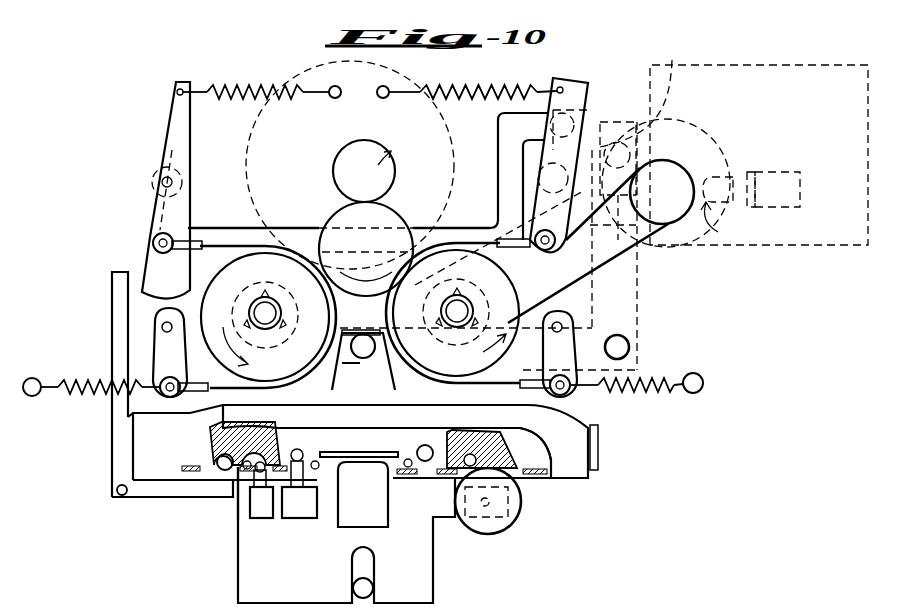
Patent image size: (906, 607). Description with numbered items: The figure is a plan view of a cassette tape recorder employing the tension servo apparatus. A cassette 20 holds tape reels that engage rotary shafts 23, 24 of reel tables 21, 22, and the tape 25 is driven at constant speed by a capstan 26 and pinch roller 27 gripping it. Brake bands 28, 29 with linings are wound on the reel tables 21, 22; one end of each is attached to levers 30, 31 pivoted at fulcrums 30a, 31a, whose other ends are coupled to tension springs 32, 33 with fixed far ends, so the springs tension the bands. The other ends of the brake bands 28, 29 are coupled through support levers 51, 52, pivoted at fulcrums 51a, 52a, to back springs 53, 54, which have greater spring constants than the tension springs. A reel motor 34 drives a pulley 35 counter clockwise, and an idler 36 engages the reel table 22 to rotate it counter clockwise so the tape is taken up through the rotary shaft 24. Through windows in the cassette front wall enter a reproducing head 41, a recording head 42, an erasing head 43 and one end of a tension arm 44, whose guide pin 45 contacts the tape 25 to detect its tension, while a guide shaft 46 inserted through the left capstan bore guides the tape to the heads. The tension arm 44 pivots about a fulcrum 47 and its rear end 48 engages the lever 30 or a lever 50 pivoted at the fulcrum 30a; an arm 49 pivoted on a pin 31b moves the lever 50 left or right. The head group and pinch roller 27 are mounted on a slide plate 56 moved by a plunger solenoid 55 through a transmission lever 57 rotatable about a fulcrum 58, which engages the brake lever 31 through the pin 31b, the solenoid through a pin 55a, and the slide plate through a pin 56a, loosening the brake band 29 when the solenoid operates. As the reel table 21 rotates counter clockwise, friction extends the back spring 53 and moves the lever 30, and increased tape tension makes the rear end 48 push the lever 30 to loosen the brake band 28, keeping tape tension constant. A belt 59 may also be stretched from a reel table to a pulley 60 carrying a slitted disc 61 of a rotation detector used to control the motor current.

The cassette 20 is at (580, 472).
The reel table 21 is at (193, 413).
The reel table 22 is at (530, 404).
The rotary shaft 23 is at (285, 318).
The rotary shaft 24 is at (510, 278).
The tape 25 is at (420, 481).
The capstan 26 is at (519, 501).
The pinch roller 27 is at (497, 528).
The brake band 28 is at (332, 377).
The brake band 29 is at (473, 220).
The lever 30 is at (150, 246).
The fulcrum 30a is at (160, 166).
The lever 31 is at (588, 92).
The fulcrum 31a is at (537, 167).
The pin 31b is at (597, 111).
The tension spring 32 is at (270, 85).
The tension spring 33 is at (490, 80).
The reel motor 34 is at (262, 142).
The pulley 35 is at (394, 150).
The idler 36 is at (396, 200).
The reproducing head 41 is at (380, 514).
The recording head 42 is at (300, 520).
The erasing head 43 is at (267, 520).
The tension arm 44 is at (157, 488).
The guide pin 45 is at (227, 478).
The guide shaft 46 is at (238, 505).
The fulcrum 47 is at (120, 496).
The rear end 48 is at (106, 294).
The arm 49 is at (237, 226).
The lever 50 is at (162, 327).
The support lever 51 is at (160, 366).
The fulcrum 51a is at (156, 333).
The support lever 52 is at (578, 340).
The fulcrum 52a is at (580, 306).
The back spring 53 is at (95, 396).
The back spring 54 is at (644, 398).
The plunger solenoid 55 is at (787, 248).
The pin 55a is at (648, 93).
The slide plate 56 is at (433, 578).
The pin 56a is at (360, 335).
The transmission lever 57 is at (637, 321).
The fulcrum 58 is at (630, 347).
The belt 59 is at (612, 262).
The pulley 60 is at (675, 170).
The disc 61 is at (688, 266).